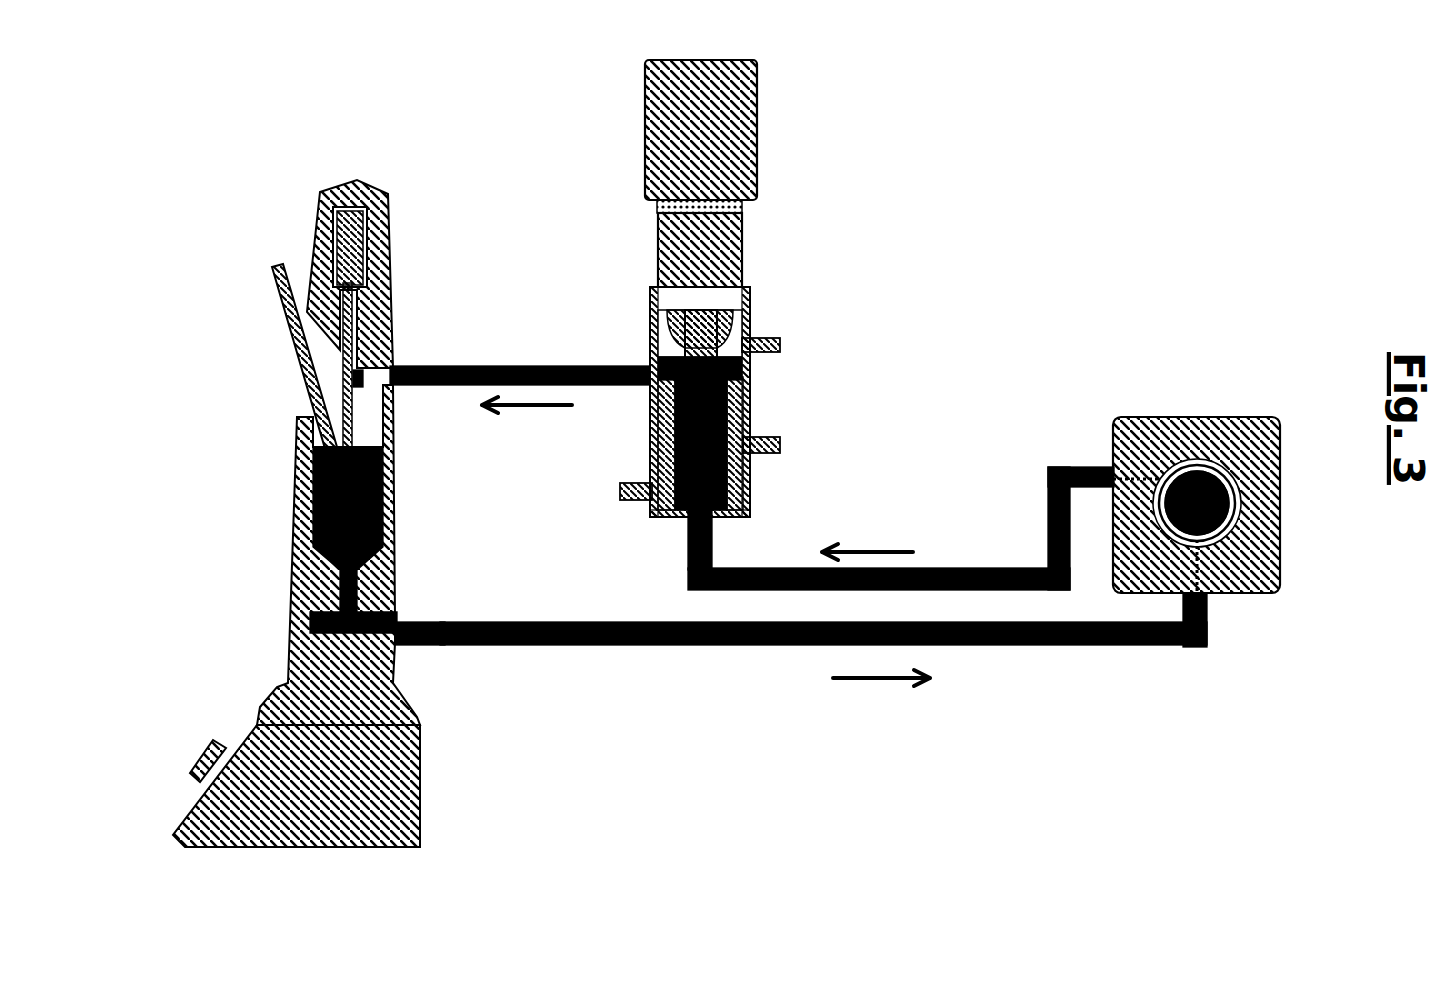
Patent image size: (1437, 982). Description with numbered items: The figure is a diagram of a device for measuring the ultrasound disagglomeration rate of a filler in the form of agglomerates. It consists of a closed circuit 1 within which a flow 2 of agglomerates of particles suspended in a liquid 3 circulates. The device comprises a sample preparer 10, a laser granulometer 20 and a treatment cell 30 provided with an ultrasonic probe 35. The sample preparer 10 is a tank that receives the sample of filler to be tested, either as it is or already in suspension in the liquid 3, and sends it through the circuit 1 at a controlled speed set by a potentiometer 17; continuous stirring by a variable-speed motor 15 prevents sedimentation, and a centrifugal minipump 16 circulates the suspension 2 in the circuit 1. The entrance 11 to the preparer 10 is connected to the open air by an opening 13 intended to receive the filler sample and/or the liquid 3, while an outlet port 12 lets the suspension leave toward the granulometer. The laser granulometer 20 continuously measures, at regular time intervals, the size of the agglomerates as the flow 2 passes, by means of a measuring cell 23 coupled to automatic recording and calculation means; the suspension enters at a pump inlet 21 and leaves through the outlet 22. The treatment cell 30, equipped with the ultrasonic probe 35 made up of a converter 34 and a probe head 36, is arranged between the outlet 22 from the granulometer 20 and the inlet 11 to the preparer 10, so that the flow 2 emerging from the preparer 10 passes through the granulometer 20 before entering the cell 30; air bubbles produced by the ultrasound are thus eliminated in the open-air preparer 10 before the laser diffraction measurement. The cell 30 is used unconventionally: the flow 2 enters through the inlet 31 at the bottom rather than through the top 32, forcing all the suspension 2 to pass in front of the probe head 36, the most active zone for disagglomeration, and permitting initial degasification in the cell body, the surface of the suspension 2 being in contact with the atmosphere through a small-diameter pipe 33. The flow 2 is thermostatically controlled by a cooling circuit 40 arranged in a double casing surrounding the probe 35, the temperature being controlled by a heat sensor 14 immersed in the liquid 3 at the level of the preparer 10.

The closed circuit 1 is at (1133, 160).
The flow 2 is at (517, 365).
The liquid 3 is at (398, 487).
The sample preparer 10 is at (272, 474).
The entrance 11 is at (404, 365).
The outlet port 12 is at (414, 618).
The opening 13 is at (325, 372).
The heat sensor 14 is at (270, 268).
The motor 15 is at (390, 208).
The centrifugal minipump 16 is at (290, 590).
The potentiometer 17 is at (200, 752).
The laser granulometer 20 is at (1216, 395).
The pump outlet 21 is at (1210, 605).
The outlet 22 is at (1105, 462).
The measuring cell 23 is at (1235, 506).
The treatment cell 30 is at (781, 281).
The inlet 31 is at (686, 523).
The top 32 is at (640, 360).
The pipe 33 is at (776, 340).
The converter 34 is at (650, 130).
The ultrasonic probe 35 is at (657, 272).
The probe head 36 is at (748, 478).
The cooling circuit 40 is at (780, 447).